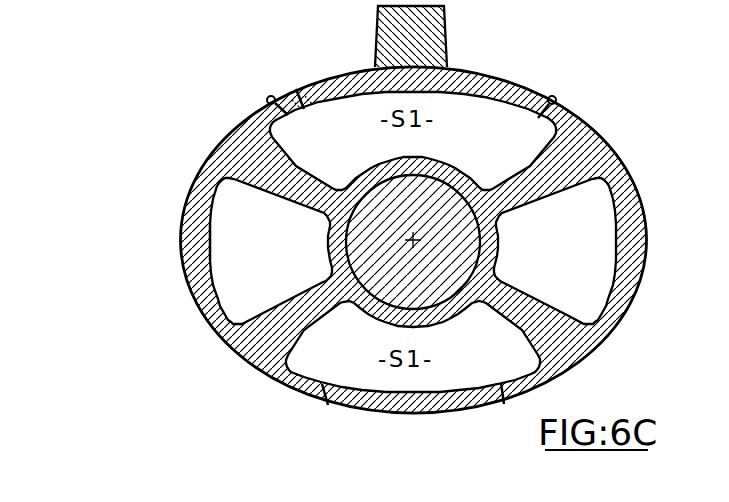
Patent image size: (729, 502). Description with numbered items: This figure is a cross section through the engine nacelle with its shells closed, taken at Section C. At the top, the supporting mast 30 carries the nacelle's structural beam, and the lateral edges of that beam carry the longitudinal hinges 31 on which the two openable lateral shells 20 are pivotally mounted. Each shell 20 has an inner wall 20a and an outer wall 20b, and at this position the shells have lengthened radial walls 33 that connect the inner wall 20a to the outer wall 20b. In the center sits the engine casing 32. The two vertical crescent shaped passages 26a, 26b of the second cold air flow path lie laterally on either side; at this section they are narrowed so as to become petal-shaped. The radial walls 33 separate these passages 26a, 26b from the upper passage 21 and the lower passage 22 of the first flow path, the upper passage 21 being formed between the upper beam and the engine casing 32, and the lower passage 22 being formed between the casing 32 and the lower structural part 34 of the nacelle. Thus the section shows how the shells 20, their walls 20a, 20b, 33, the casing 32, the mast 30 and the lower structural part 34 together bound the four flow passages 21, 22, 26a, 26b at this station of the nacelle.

The openable lateral shells 20 is at (622, 320).
The inner wall 20a is at (327, 227).
The outer wall 20b is at (202, 295).
The upper passage 21 is at (475, 118).
The lower passage 22 is at (360, 372).
The crescent shaped passage 26a is at (220, 267).
The crescent shaped passage 26b is at (604, 237).
The supporting mast 30 is at (400, 38).
The longitudinal hinges 31 is at (267, 100).
The engine casing 32 is at (293, 97).
The radial walls 33 is at (262, 175).
The lower structural part 34 is at (430, 400).